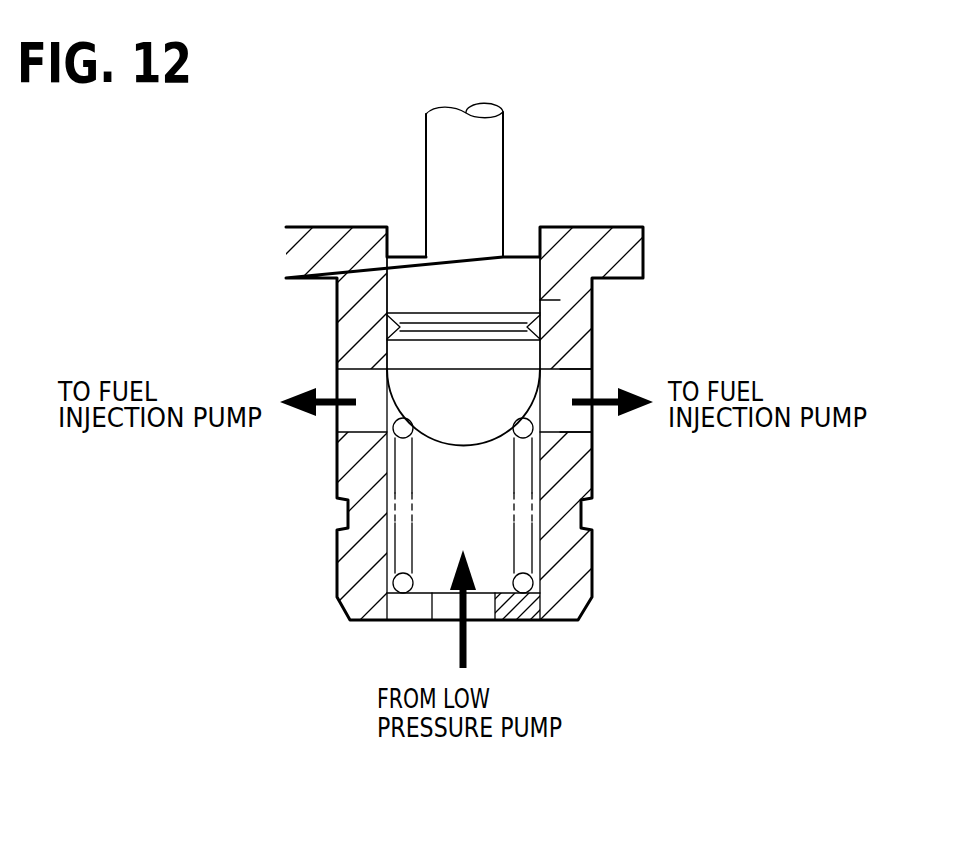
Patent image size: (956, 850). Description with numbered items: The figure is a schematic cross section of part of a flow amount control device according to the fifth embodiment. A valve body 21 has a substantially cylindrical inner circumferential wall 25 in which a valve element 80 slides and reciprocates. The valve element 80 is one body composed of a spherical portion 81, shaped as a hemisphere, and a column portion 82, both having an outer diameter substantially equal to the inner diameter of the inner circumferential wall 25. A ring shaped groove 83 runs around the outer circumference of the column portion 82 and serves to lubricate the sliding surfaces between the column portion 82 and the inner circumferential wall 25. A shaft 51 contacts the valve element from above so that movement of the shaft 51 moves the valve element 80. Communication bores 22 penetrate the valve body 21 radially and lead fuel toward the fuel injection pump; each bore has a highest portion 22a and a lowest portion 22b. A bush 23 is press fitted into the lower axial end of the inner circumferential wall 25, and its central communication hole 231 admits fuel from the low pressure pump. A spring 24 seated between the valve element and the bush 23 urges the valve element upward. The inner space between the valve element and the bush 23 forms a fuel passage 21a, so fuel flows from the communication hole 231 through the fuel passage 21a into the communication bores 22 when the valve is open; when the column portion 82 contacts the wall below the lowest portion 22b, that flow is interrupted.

The valve body 21 is at (337, 302).
The fuel passage 21a is at (443, 530).
The communication bores 22 is at (353, 373).
The highest portion of communication bore 22a is at (580, 378).
The lowest portion of communication bore 22b is at (565, 424).
The bush 23 is at (400, 622).
The communication hole 231 is at (491, 622).
The spring 24 is at (535, 550).
The inner circumferential wall 25 is at (388, 251).
The shaft 51 is at (485, 172).
The valve element 80 is at (554, 302).
The spherical portion 81 is at (437, 413).
The column portion 82 is at (463, 293).
The ring shaped groove 83 is at (503, 318).